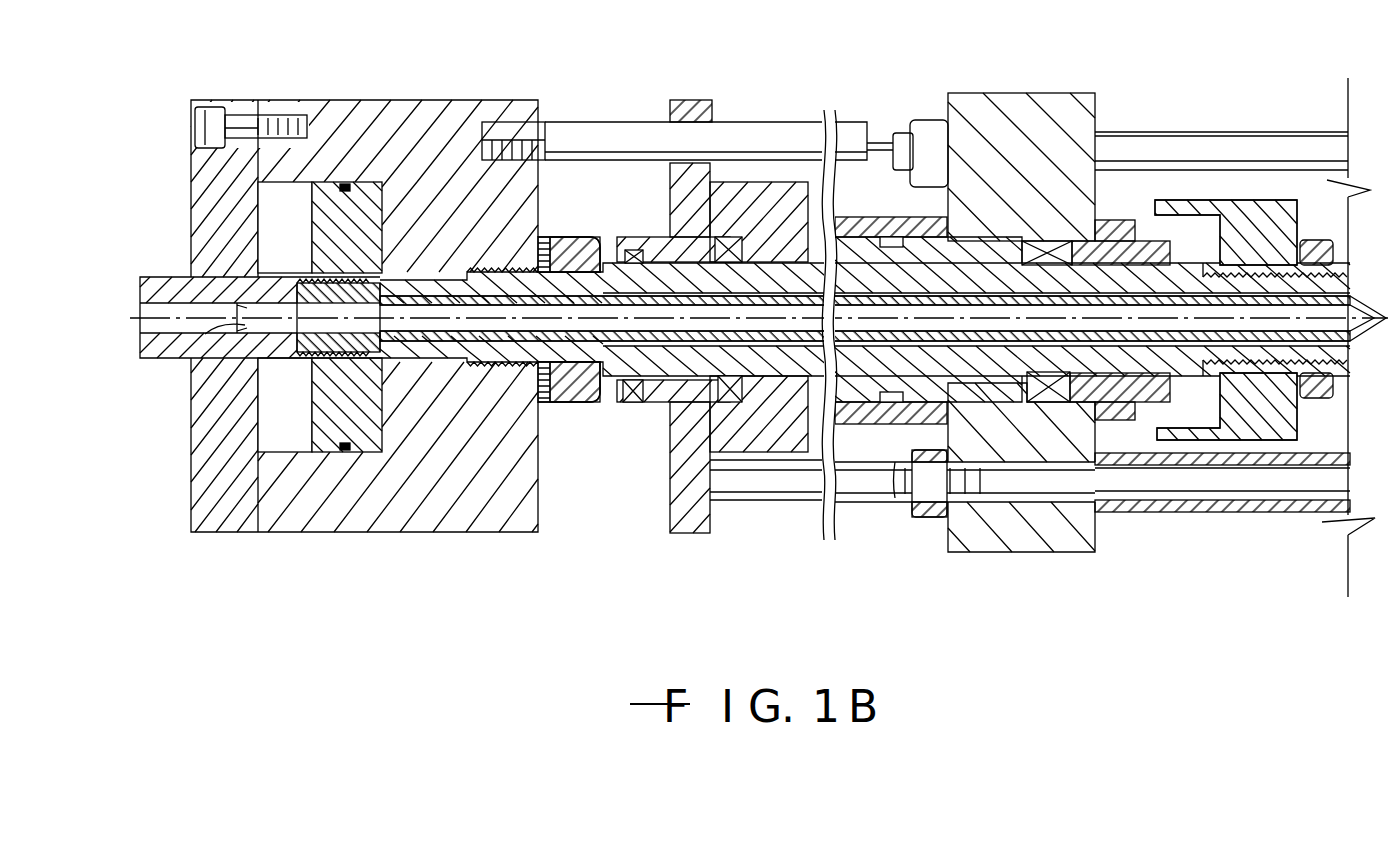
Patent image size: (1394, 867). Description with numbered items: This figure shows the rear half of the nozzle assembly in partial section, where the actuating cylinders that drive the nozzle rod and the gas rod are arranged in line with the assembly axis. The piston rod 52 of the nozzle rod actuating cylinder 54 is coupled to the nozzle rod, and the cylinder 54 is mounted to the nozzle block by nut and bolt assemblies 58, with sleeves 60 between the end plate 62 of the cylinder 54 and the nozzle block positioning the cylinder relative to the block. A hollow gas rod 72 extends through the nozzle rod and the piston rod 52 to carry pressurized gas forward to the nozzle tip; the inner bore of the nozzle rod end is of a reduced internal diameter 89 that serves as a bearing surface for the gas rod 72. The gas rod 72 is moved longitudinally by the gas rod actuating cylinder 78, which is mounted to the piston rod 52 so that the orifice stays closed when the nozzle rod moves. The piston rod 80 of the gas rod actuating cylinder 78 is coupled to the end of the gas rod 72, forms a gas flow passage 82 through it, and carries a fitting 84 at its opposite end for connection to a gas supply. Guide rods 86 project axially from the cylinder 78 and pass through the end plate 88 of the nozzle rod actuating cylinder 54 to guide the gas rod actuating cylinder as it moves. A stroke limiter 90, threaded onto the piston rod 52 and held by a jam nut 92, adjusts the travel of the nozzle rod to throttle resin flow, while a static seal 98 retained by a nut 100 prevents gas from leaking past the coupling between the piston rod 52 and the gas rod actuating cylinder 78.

The piston rod 52 is at (503, 367).
The nozzle rod actuating cylinder 54 is at (1031, 556).
The nut and bolt assemblies 58 is at (923, 526).
The sleeves 60 is at (1153, 131).
The end plate 62 is at (1010, 93).
The gas rod 72 is at (601, 365).
The gas rod actuating cylinder 78 is at (346, 538).
The piston rod 80 is at (434, 366).
The gas flow passage 82 is at (196, 358).
The fitting 84 is at (166, 302).
The guide rods 86 is at (582, 120).
The end plate 88 is at (693, 102).
The reduced internal diameter 89 is at (1246, 298).
The stroke limiter 90 is at (1240, 441).
The jam nut 92 is at (1326, 399).
The seal 98 is at (543, 404).
The nut 100 is at (574, 236).